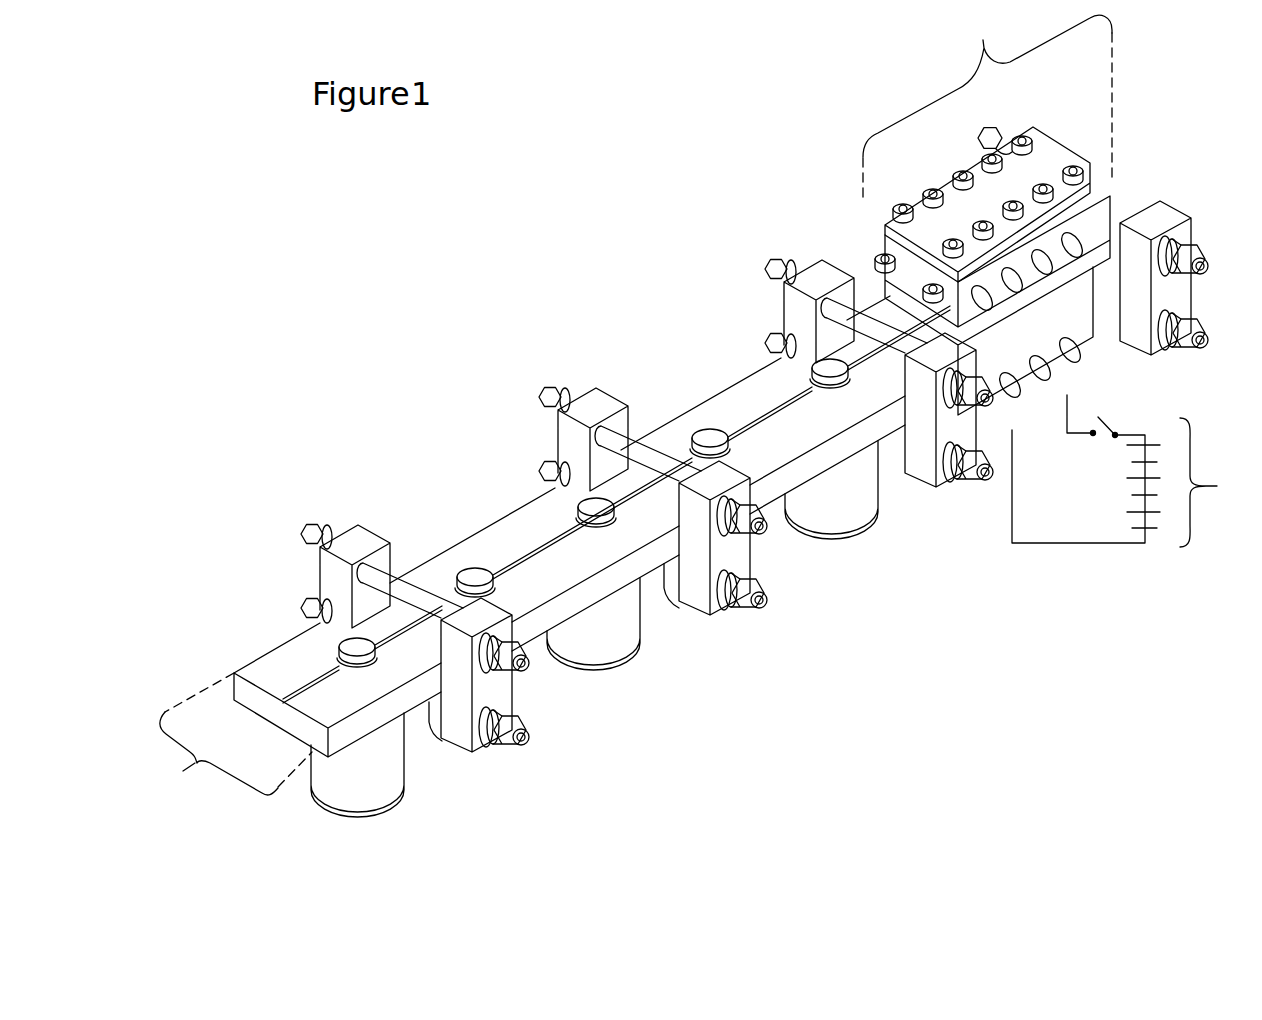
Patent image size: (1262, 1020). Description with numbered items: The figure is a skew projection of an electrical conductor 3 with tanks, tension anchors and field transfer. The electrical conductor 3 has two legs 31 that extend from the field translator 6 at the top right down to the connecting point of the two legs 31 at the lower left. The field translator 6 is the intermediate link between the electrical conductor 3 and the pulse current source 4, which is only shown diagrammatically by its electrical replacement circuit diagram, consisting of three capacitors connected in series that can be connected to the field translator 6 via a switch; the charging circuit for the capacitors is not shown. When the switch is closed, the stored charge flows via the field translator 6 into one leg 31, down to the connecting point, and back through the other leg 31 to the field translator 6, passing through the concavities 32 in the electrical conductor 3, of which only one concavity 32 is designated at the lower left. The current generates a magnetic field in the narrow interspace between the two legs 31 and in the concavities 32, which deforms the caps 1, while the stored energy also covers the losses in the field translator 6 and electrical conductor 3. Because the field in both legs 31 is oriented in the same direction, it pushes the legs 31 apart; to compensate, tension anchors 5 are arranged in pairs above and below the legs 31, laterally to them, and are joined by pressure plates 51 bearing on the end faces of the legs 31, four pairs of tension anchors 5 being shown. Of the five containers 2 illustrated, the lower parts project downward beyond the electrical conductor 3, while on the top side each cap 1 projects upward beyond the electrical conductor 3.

The cap 1 is at (827, 367).
The container 2 is at (833, 510).
The electrical conductor 3 is at (530, 545).
The leg 31 is at (707, 410).
The concavity 32 is at (368, 667).
The pulse current source 4 is at (1129, 471).
The tension anchor 5 is at (850, 303).
The pressure plate 51 is at (810, 260).
The field translator 6 is at (987, 212).